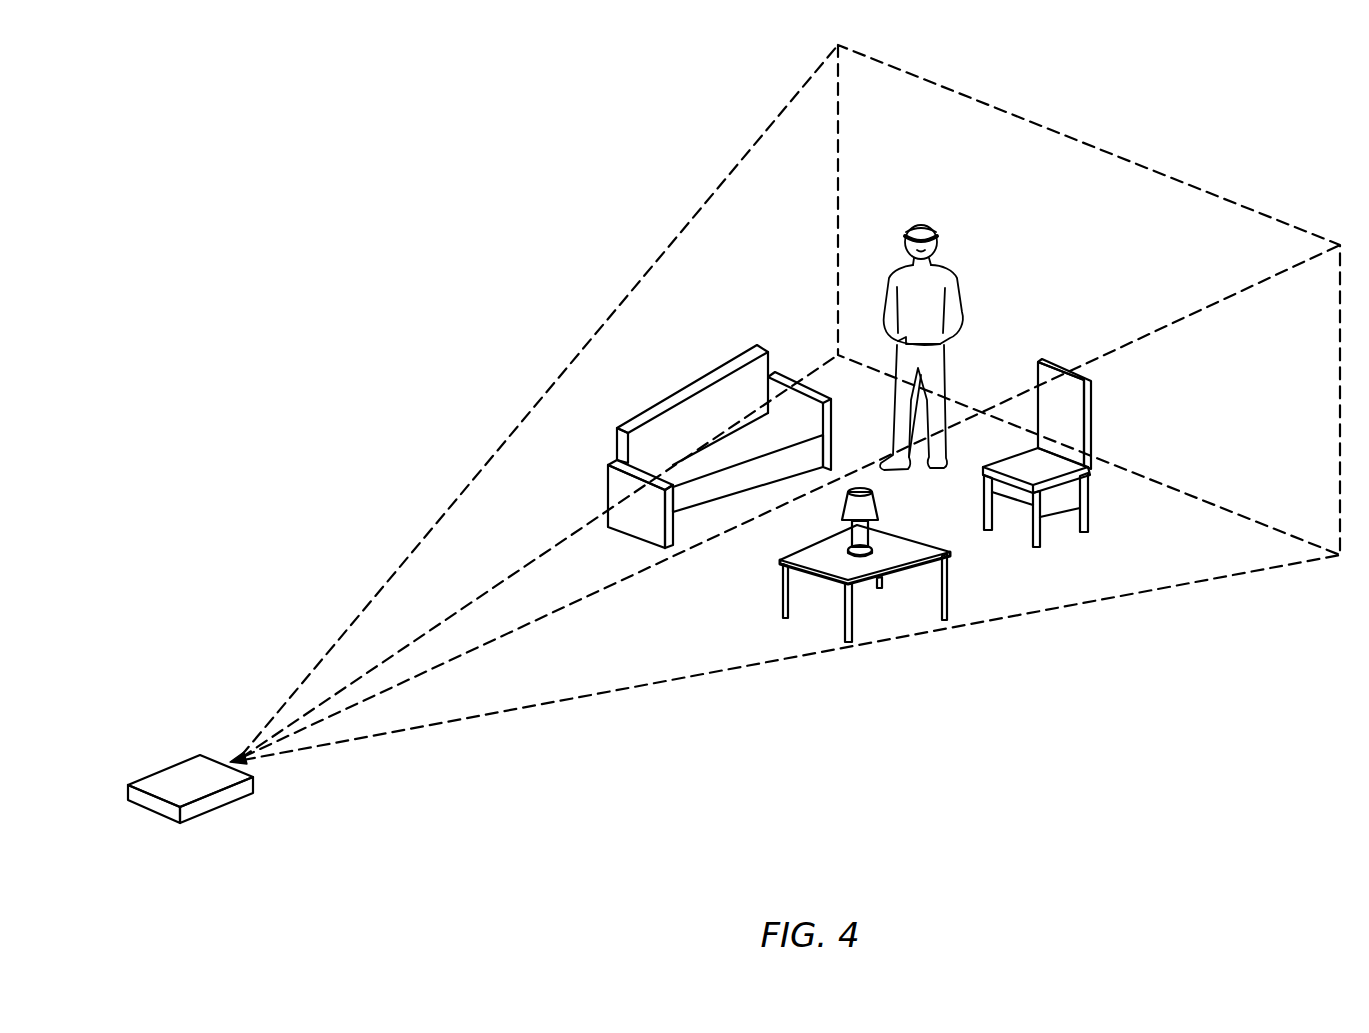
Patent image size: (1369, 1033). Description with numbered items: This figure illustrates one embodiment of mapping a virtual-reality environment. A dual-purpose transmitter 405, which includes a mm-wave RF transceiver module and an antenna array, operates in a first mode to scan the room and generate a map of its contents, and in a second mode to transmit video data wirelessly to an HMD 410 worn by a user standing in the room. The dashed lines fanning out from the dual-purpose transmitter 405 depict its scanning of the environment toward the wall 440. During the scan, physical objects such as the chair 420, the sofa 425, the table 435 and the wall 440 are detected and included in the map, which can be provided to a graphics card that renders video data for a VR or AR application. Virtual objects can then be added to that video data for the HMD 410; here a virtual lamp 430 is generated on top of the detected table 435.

The dual-purpose transmitter 405 is at (167, 767).
The HMD 410 is at (944, 222).
The chair 420 is at (1090, 407).
The sofa 425 is at (697, 382).
The virtual lamp 430 is at (842, 500).
The table 435 is at (930, 540).
The wall 440 is at (902, 82).